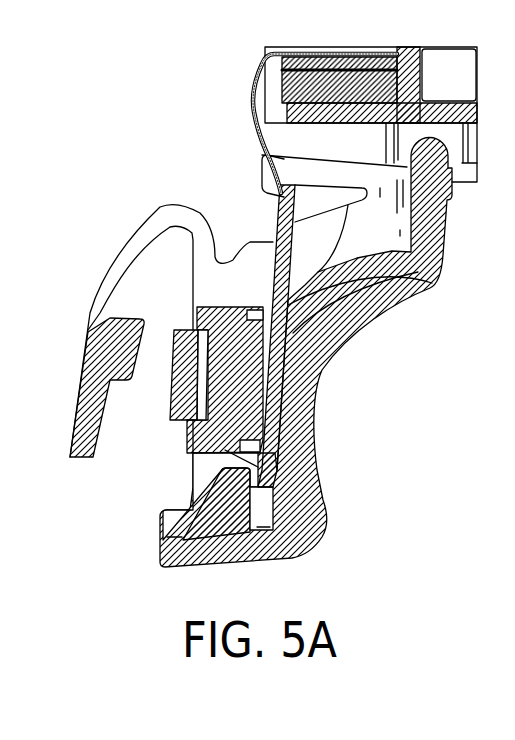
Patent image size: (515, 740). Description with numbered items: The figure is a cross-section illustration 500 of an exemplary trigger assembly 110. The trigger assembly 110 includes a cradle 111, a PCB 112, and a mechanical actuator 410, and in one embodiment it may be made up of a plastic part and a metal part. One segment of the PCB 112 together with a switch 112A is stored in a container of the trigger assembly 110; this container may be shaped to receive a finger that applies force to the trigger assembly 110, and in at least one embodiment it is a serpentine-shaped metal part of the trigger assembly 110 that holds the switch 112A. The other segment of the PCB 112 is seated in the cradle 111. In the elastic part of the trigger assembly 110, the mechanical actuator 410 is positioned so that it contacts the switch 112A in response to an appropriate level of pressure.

The cross-section illustration 500 is at (108, 93).
The trigger assembly 110 is at (364, 315).
The cradle 111 is at (482, 79).
The PCB 112 is at (266, 50).
The switch 112A is at (172, 430).
The mechanical actuator 410 is at (514, 420).